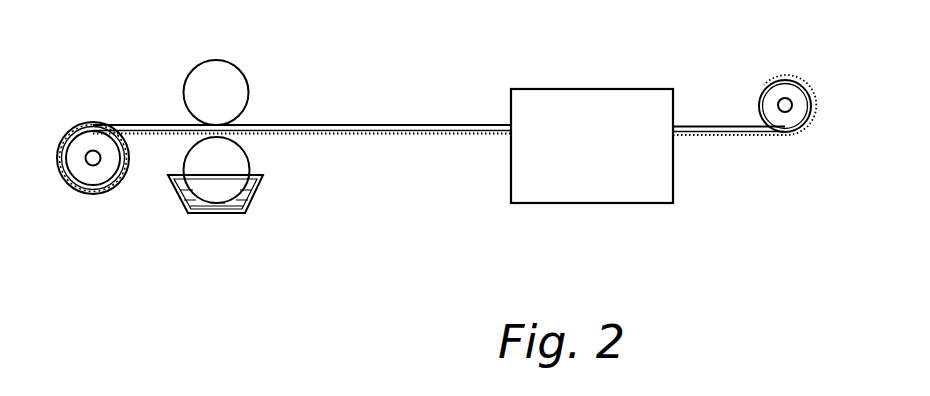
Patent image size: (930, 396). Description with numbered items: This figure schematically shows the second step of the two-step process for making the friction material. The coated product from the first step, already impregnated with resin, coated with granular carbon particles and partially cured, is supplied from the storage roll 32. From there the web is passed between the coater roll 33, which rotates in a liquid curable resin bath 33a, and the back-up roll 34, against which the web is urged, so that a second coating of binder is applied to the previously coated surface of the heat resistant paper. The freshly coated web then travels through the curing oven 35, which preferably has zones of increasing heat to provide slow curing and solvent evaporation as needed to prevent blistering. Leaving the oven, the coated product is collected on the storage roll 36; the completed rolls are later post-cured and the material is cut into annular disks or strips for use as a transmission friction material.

The storage roll 32 is at (80, 172).
The coater roll 33 is at (186, 156).
The liquid curable resin bath 33a is at (182, 200).
The back-up roll 34 is at (237, 78).
The curing oven 35 is at (551, 98).
The storage roll 36 is at (770, 92).